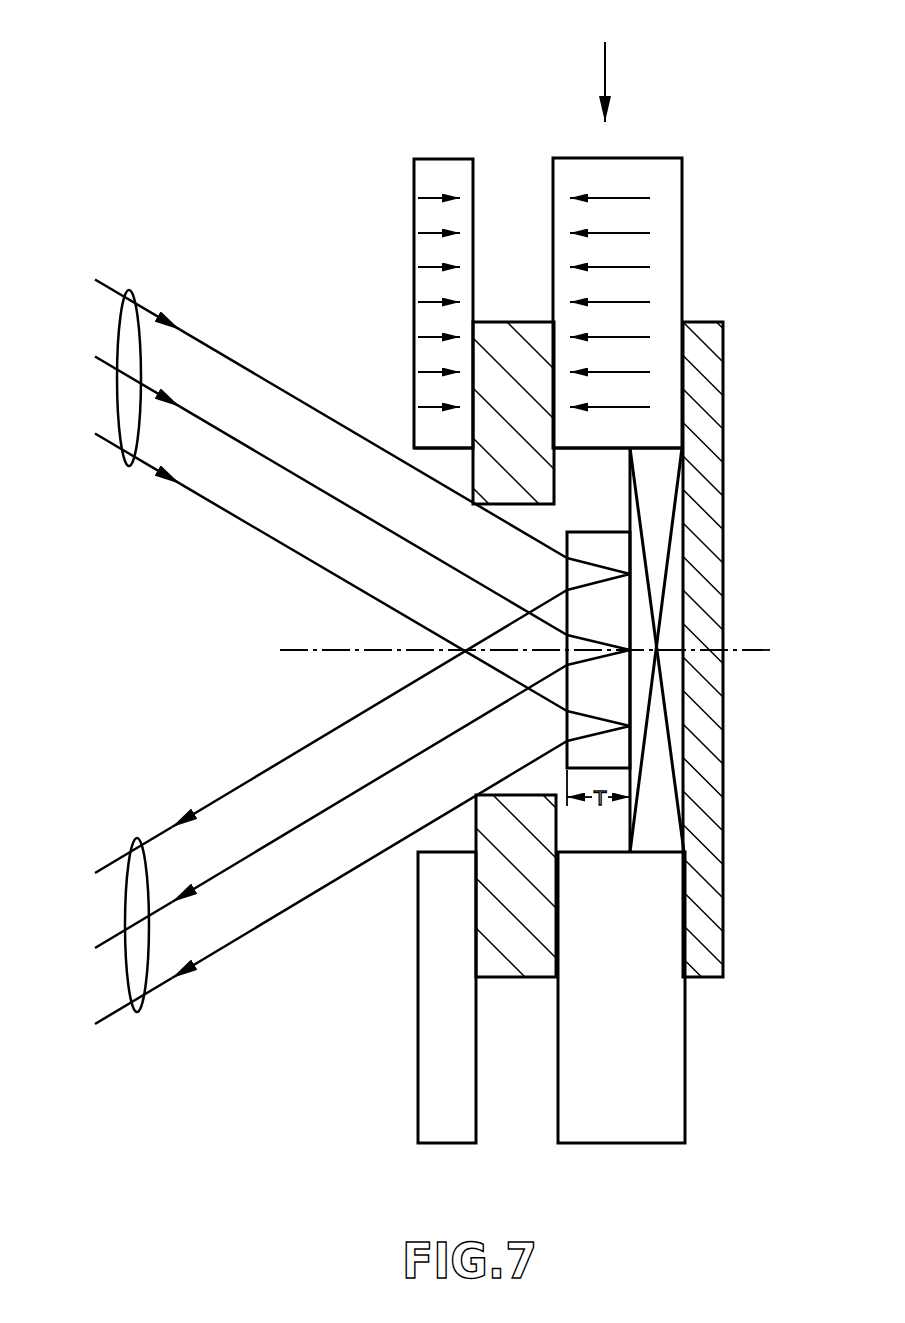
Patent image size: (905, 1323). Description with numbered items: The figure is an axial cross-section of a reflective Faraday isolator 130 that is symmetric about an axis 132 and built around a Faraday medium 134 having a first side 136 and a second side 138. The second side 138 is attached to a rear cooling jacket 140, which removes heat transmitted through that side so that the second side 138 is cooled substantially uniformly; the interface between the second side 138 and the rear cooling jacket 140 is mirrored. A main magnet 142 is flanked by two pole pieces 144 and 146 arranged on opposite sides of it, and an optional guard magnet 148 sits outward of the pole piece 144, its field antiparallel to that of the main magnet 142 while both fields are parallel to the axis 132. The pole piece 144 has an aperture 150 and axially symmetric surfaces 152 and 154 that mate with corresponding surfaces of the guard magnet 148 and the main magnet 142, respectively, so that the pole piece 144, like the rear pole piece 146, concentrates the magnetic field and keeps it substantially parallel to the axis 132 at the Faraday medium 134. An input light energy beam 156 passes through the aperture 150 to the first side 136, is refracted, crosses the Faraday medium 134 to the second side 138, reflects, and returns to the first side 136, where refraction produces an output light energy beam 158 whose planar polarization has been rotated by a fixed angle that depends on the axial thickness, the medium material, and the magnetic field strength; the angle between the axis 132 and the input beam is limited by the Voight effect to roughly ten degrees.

The Faraday isolator 130 is at (604, 63).
The axis 132 is at (767, 650).
The Faraday medium 134 is at (612, 610).
The first side 136 is at (566, 576).
The second side 138 is at (636, 704).
The rear cooling jacket 140 is at (662, 508).
The main magnet 142 is at (683, 210).
The pole piece 144 is at (530, 322).
The rear pole piece 146 is at (700, 322).
The guard magnet 148 is at (414, 170).
The aperture 150 is at (527, 640).
The axially symmetric surface 152 is at (470, 440).
The axially symmetric surface 154 is at (557, 440).
The input light energy beam 156 is at (129, 290).
The output light energy beam 158 is at (137, 1012).